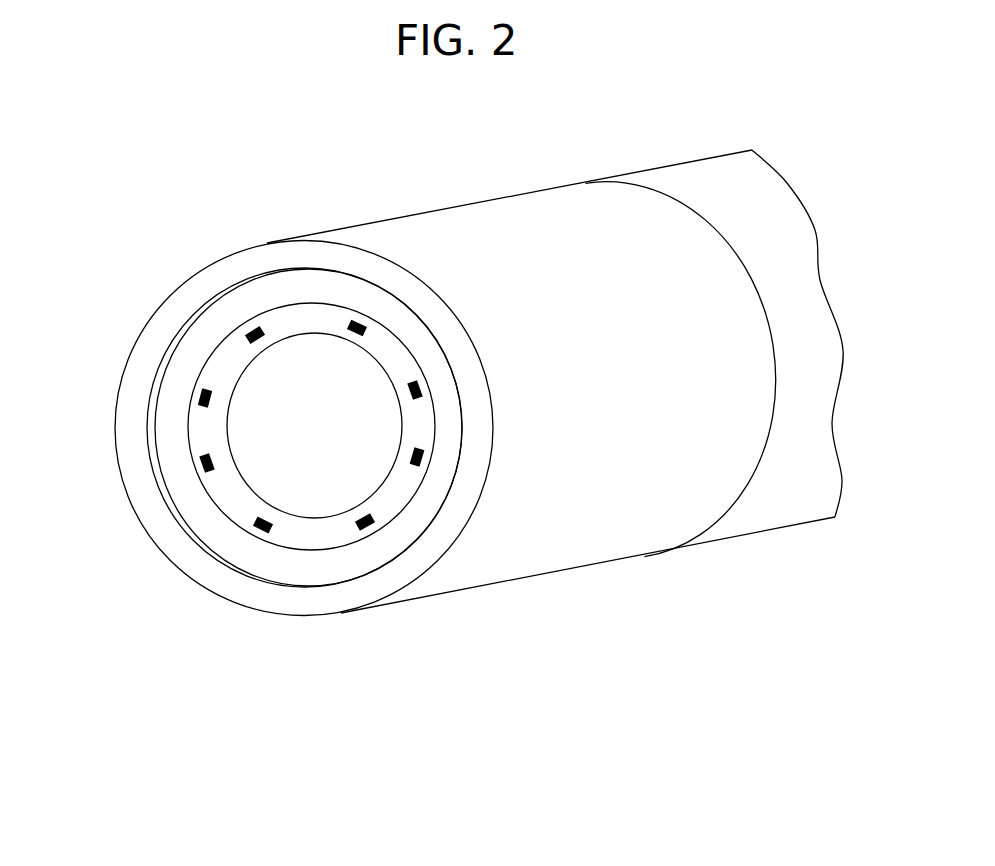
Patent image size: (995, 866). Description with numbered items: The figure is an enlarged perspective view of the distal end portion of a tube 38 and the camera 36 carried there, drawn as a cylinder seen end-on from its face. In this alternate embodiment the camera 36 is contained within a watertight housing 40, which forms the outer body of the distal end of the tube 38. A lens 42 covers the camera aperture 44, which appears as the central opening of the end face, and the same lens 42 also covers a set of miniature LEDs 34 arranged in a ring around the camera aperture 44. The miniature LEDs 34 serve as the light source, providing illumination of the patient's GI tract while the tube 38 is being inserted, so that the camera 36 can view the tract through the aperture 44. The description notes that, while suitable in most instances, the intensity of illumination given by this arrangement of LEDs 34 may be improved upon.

The miniature LEDs 34 is at (198, 393).
The camera 36 is at (358, 618).
The tube 38 is at (740, 538).
The watertight housing 40 is at (423, 558).
The lens 42 is at (200, 522).
The camera aperture 44 is at (300, 382).